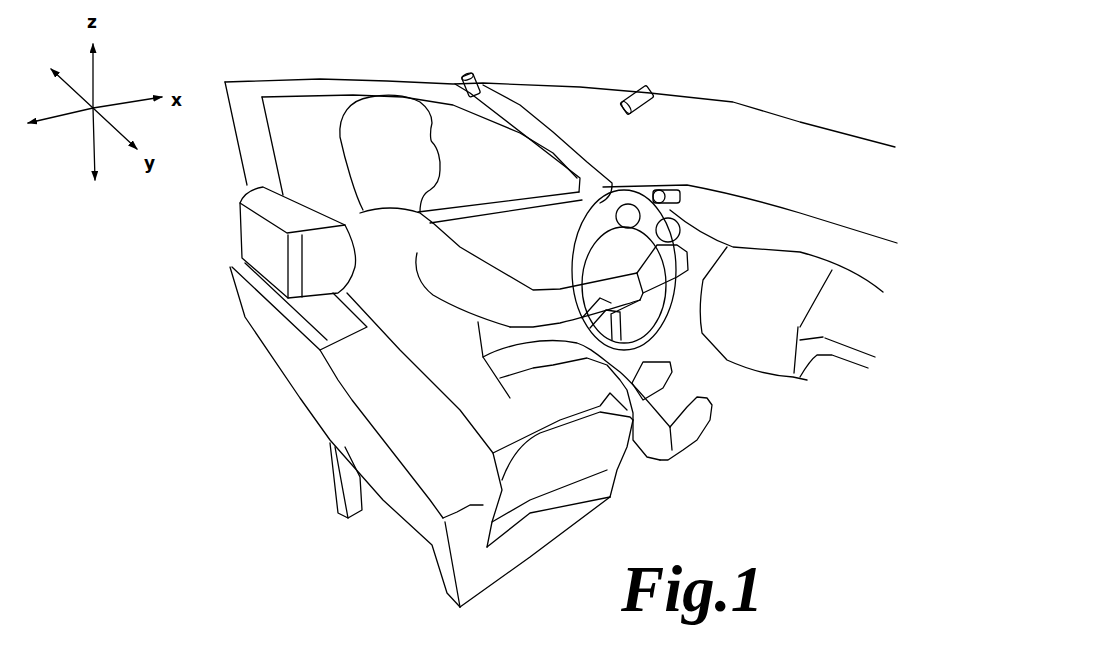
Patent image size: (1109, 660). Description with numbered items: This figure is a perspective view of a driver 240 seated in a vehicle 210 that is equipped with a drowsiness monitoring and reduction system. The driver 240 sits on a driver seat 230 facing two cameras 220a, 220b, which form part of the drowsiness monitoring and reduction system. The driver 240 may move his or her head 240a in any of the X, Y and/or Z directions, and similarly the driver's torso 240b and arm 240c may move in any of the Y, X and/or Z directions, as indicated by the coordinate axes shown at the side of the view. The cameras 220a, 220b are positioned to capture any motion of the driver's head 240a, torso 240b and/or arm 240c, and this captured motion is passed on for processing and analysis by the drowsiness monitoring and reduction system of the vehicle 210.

The vehicle 210 is at (778, 320).
The camera 220a is at (472, 73).
The camera 220b is at (672, 193).
The driver seat 230 is at (236, 305).
The driver 240 is at (526, 241).
The head 240a is at (388, 110).
The torso 240b is at (477, 367).
The arm 240c is at (583, 283).